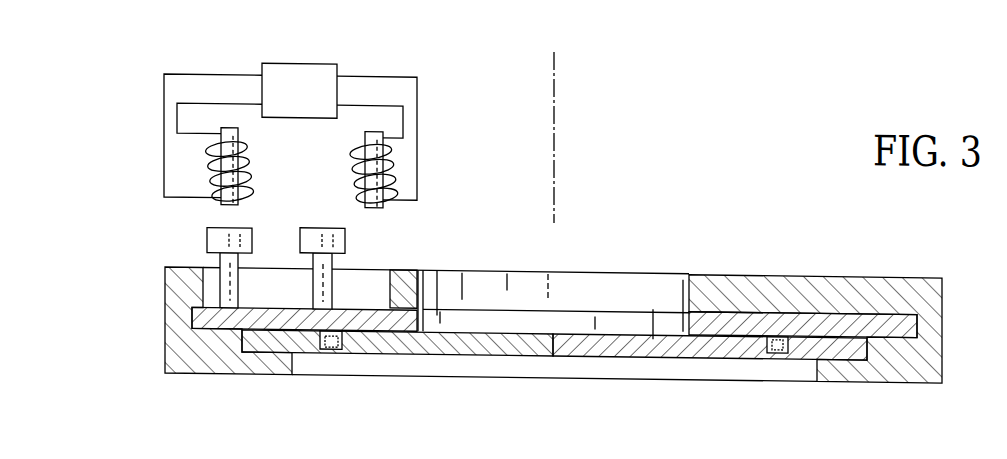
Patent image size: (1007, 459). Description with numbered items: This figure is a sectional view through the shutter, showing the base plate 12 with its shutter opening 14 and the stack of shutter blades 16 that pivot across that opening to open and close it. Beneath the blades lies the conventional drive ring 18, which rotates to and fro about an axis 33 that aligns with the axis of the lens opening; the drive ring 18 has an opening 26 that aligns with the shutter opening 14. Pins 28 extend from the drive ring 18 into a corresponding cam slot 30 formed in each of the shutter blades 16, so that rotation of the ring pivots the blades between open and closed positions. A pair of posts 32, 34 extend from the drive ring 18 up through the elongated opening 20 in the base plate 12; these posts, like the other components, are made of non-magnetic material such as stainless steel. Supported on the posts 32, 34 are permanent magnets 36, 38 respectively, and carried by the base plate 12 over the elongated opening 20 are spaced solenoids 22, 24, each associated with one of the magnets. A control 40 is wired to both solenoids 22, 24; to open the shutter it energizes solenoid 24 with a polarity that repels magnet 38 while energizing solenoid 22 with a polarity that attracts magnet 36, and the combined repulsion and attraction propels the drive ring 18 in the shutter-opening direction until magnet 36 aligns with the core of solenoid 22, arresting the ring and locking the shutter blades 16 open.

The base plate 12 is at (793, 267).
The shutter opening 14 is at (683, 271).
The shutter blades 16 is at (582, 351).
The drive ring 18 is at (486, 306).
The elongated opening 20 is at (390, 275).
The solenoid 22 is at (352, 168).
The solenoid 24 is at (250, 139).
The opening 26 is at (683, 316).
The pins 28 is at (327, 348).
The cam slot 30 is at (337, 348).
The post 32 is at (336, 279).
The axis 33 is at (554, 103).
The post 34 is at (221, 261).
The permanent magnet 36 is at (318, 230).
The permanent magnet 38 is at (207, 232).
The control 40 is at (308, 99).